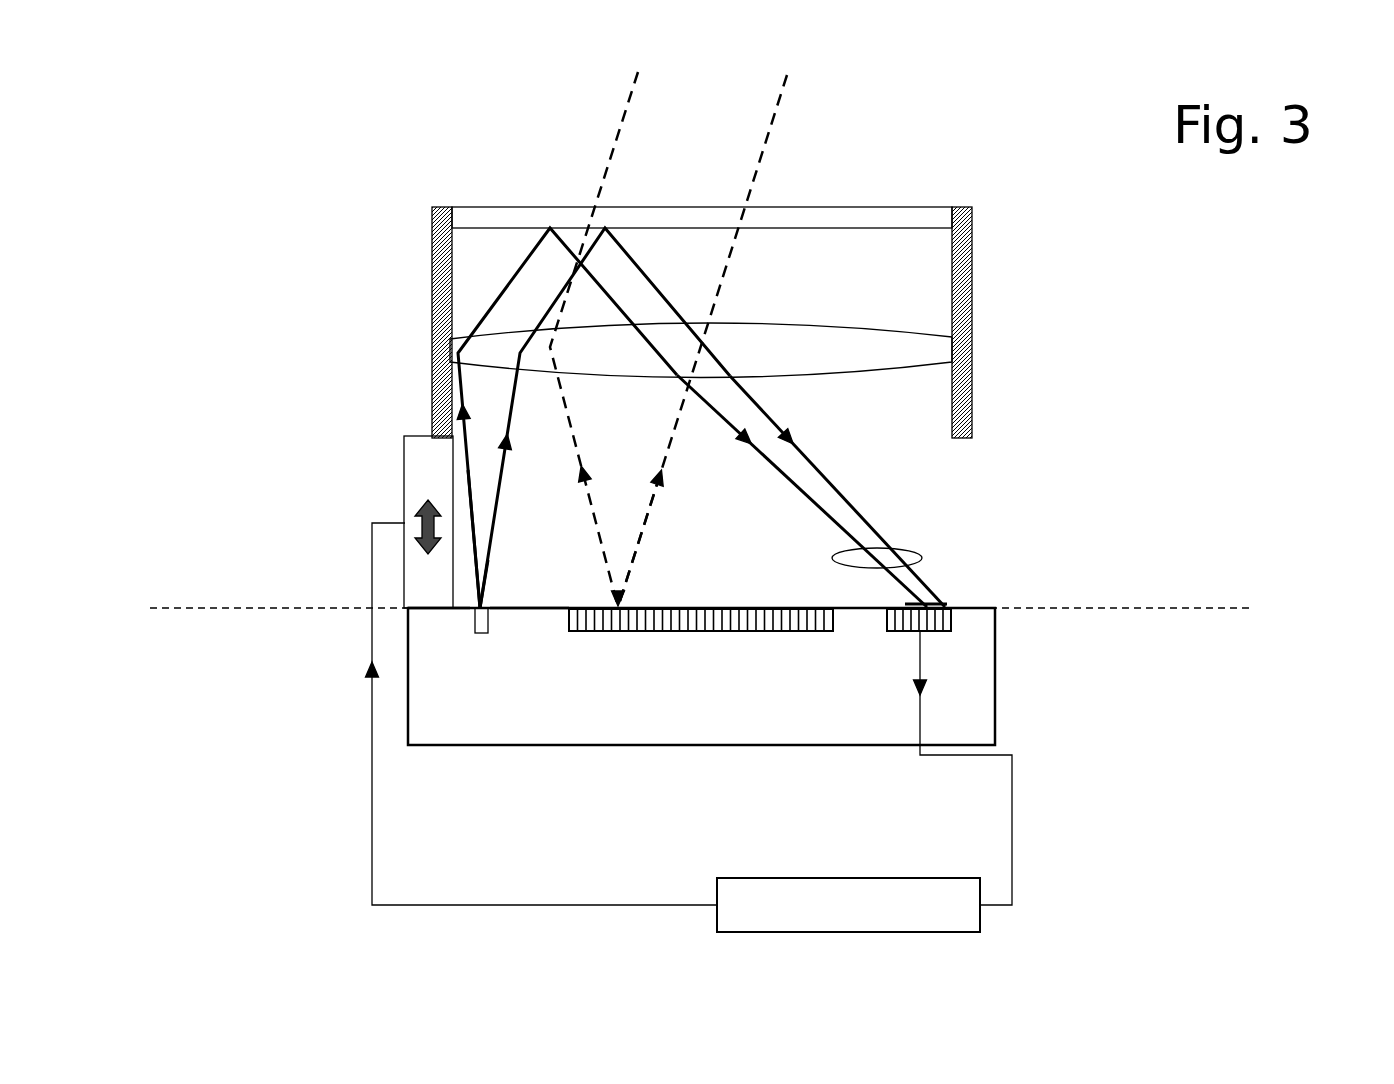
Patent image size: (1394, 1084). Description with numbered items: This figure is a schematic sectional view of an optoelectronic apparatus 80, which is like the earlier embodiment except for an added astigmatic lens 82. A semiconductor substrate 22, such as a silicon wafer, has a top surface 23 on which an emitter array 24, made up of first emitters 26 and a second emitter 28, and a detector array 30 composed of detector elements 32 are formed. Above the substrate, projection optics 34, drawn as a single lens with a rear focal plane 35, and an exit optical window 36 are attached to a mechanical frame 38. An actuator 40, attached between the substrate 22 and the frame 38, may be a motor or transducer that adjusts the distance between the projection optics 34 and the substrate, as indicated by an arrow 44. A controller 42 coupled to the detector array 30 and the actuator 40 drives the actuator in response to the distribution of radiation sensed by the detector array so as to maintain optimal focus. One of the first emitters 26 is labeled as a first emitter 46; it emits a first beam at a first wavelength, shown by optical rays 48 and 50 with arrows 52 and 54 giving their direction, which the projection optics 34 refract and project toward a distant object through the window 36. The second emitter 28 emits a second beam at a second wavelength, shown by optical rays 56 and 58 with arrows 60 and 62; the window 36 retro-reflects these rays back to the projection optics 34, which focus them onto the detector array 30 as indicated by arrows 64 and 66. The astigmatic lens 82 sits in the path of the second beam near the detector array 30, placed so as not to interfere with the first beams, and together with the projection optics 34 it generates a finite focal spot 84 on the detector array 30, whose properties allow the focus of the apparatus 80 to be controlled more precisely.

The optoelectronic apparatus 80 is at (125, 242).
The mechanical frame 38 is at (440, 272).
The exit optical window 36 is at (862, 213).
The projection optics 34 is at (917, 348).
The actuator 40 is at (418, 475).
The arrow 44 is at (418, 527).
The rear focal plane 35 is at (1200, 608).
The semiconductor substrate 22 is at (968, 693).
The top surface 23 is at (435, 612).
The second emitter 28 is at (472, 630).
The optical ray 48 is at (550, 610).
The first emitters 26 is at (763, 607).
The first emitter 46 is at (602, 631).
The emitter array 24 is at (675, 631).
The finite focal spot 84 is at (945, 605).
The detector array 30 is at (900, 633).
The astigmatic lens 82 is at (918, 558).
The detector elements 32 is at (900, 605).
The arrow 60 is at (458, 412).
The optical ray 56 is at (468, 485).
The arrow 64 is at (742, 443).
The arrow 62 is at (509, 442).
The arrow 66 is at (790, 440).
The optical ray 58 is at (493, 552).
The arrow 52 is at (587, 500).
The arrow 54 is at (661, 486).
The optical ray 50 is at (647, 523).
The controller 42 is at (955, 902).